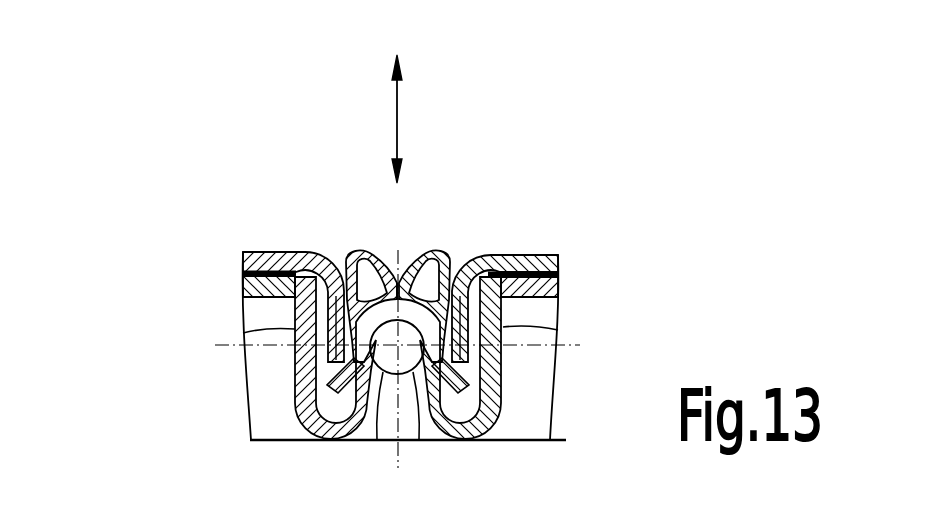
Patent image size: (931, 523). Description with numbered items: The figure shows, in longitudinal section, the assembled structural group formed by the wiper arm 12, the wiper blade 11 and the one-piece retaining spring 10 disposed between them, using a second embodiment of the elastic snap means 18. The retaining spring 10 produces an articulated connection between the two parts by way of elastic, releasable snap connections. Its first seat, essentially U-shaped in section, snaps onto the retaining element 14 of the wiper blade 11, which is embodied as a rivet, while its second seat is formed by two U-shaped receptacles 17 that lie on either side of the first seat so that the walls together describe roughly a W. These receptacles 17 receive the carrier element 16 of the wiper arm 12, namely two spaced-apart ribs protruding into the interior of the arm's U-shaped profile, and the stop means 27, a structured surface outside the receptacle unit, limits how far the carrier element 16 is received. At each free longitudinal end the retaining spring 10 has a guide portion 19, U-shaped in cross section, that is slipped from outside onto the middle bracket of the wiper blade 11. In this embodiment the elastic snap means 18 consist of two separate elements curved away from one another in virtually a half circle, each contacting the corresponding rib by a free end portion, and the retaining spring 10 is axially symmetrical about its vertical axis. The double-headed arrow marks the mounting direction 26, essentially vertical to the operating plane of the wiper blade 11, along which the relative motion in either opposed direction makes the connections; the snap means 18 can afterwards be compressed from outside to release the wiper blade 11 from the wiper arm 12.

The retaining spring 10 is at (386, 305).
The wiper blade 11 is at (407, 417).
The wiper arm 12 is at (268, 225).
The retaining element 14 is at (383, 413).
The carrier element 16 is at (245, 327).
The receptacles 17 is at (333, 400).
The elastic snap means 18 is at (400, 213).
The guide portion 19 is at (243, 272).
The mounting direction 26 is at (397, 120).
The stop means 27 is at (243, 313).